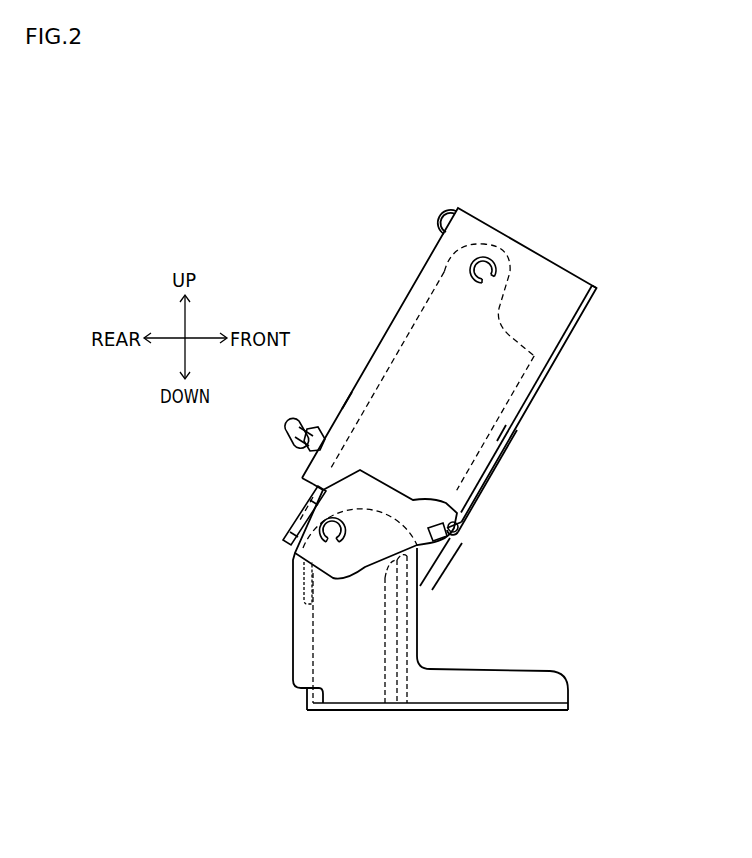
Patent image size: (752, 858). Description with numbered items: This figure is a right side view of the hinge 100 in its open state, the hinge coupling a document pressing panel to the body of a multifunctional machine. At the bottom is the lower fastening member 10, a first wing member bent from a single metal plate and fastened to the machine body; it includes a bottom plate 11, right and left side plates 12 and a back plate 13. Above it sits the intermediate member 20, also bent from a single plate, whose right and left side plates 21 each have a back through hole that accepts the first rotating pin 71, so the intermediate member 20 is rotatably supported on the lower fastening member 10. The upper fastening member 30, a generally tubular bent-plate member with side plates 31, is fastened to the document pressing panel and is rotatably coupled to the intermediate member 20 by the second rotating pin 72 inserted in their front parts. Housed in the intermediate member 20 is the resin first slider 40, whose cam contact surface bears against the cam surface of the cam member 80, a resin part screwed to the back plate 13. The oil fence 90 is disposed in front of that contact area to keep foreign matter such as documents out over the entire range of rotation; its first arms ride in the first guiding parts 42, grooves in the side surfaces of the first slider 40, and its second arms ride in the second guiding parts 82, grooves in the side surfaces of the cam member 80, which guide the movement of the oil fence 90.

The hinge 100 is at (205, 228).
The lower fastening member 10 is at (444, 653).
The bottom plate 11 is at (497, 711).
The side plate 12 is at (360, 690).
The back plate 13 is at (293, 656).
The intermediate member 20 is at (264, 511).
The side plate 21 is at (309, 498).
The upper fastening member 30 is at (350, 322).
The side plate 31 is at (366, 378).
The first slider 40 is at (508, 497).
The first guiding part 42 is at (458, 528).
The first rotating pin 71 is at (326, 540).
The second rotating pin 72 is at (487, 270).
The cam member 80 is at (295, 628).
The second guiding part 82 is at (420, 648).
The oil fence 90 is at (458, 570).